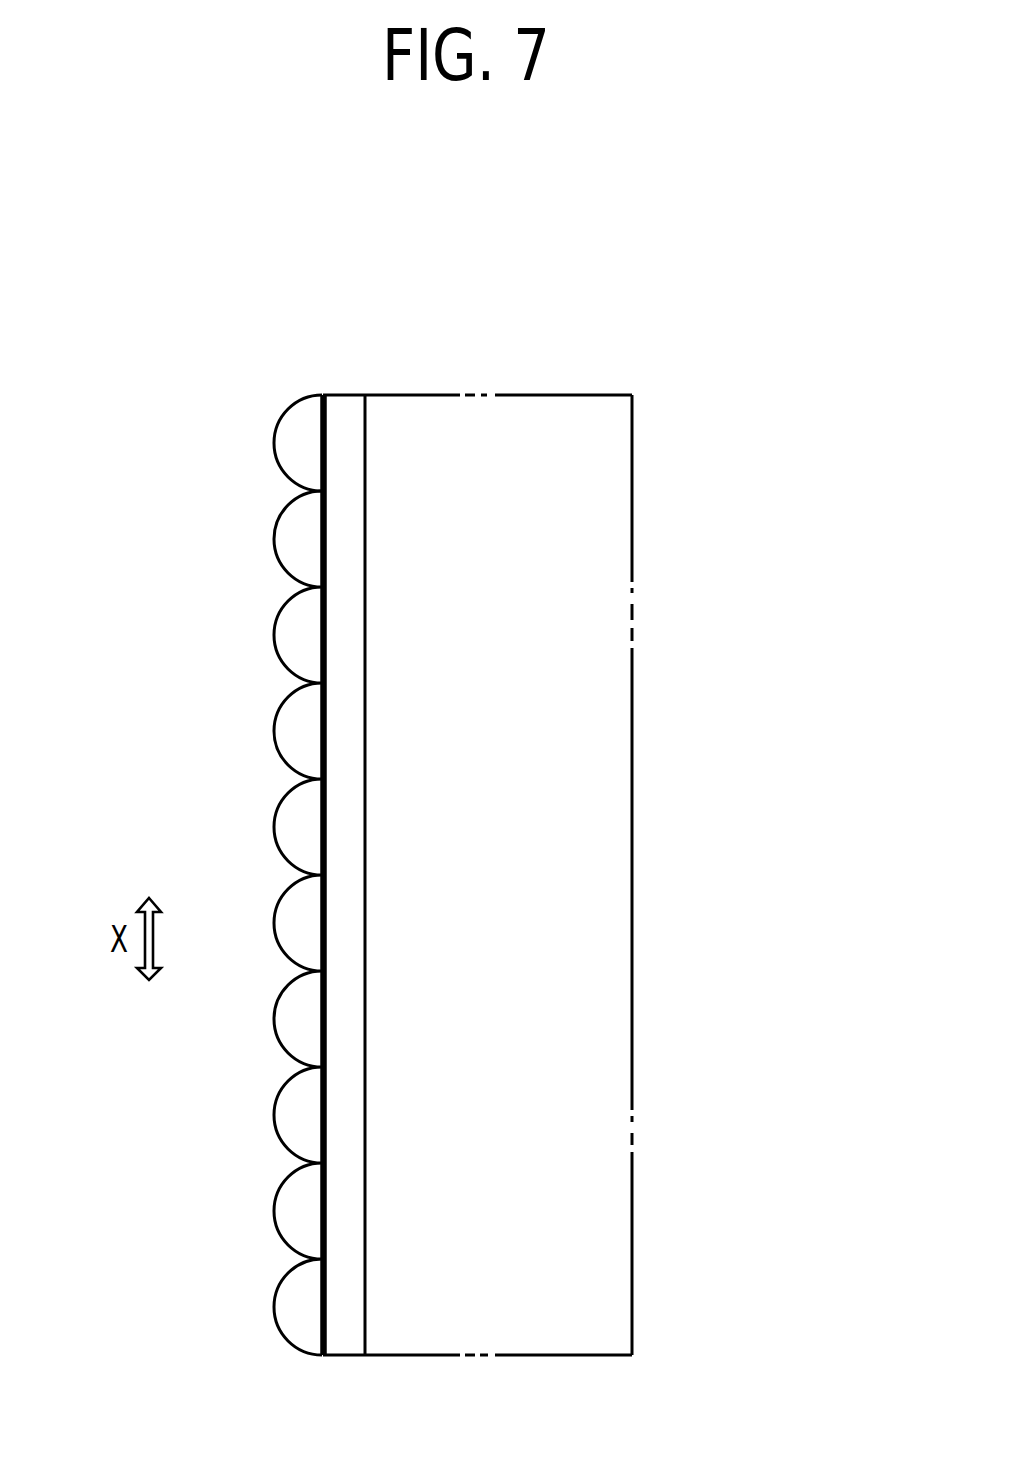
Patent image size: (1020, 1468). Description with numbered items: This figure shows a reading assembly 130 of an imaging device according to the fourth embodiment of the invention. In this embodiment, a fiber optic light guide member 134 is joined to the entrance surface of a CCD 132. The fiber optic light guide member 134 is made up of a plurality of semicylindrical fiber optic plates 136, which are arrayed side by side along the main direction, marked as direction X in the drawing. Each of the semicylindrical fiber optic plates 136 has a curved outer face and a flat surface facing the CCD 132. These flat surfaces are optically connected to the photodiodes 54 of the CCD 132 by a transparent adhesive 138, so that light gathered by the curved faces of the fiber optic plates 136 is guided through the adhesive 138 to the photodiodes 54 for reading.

The reading assembly 130 is at (663, 202).
The CCD 132 is at (583, 503).
The fiber optic light guide member 134 is at (195, 410).
The semicylindrical fiber optic plates 136 is at (293, 450).
The transparent adhesive 138 is at (327, 640).
The photodiodes 54 is at (360, 877).